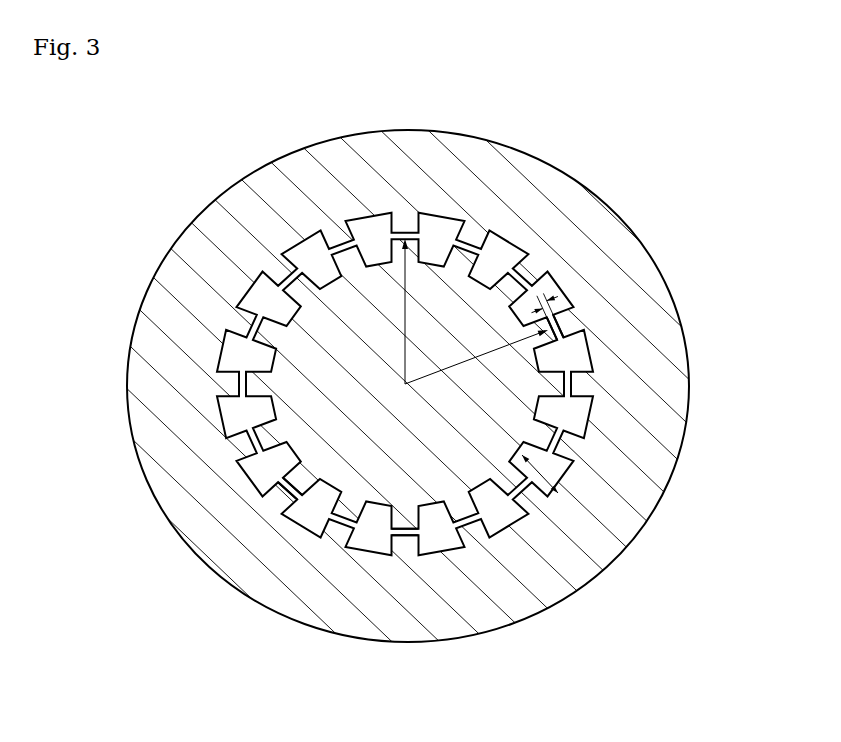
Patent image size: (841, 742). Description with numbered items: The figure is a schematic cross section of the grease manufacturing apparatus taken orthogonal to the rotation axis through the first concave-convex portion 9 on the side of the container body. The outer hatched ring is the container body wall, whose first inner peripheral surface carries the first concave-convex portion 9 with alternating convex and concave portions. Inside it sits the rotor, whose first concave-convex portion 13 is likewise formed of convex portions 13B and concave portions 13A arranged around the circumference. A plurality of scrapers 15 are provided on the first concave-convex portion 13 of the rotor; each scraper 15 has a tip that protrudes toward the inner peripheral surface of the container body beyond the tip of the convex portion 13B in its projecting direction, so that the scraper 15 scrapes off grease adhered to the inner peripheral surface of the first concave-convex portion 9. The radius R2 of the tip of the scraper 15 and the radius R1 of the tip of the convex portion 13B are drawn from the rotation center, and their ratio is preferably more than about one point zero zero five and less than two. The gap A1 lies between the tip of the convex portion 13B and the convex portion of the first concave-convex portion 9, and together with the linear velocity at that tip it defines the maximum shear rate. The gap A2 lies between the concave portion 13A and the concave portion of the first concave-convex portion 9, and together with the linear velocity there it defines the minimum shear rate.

The first concave-convex portion 9 is at (548, 285).
The scraper 15 is at (417, 232).
The first concave-convex portion 13 is at (549, 323).
The concave portion 13A is at (375, 524).
The convex portion 13B is at (297, 473).
The radius of the tip of the convex portion R1 is at (476, 357).
The radius of the tip of the scraper R2 is at (399, 311).
The gap A1 is at (523, 312).
The gap A2 is at (543, 471).